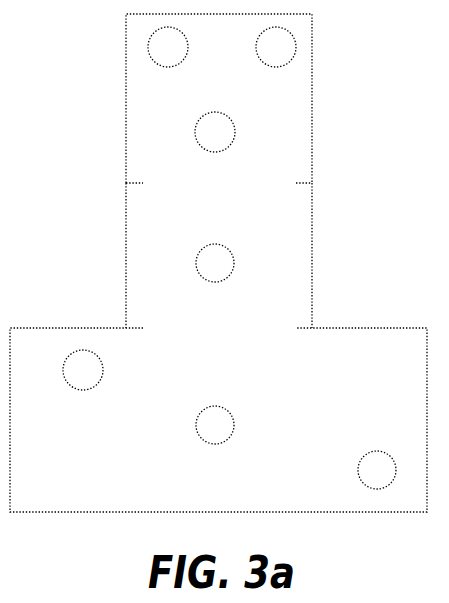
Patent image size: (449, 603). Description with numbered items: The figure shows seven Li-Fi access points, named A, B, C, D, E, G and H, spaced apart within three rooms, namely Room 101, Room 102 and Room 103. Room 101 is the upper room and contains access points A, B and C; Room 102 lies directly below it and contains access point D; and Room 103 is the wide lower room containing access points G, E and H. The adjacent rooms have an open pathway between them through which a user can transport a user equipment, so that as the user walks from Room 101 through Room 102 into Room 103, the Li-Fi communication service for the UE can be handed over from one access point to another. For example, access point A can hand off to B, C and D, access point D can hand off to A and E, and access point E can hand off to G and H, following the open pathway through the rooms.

The Room 101 is at (219, 98).
The Room 102 is at (219, 255).
The Room 103 is at (218, 420).